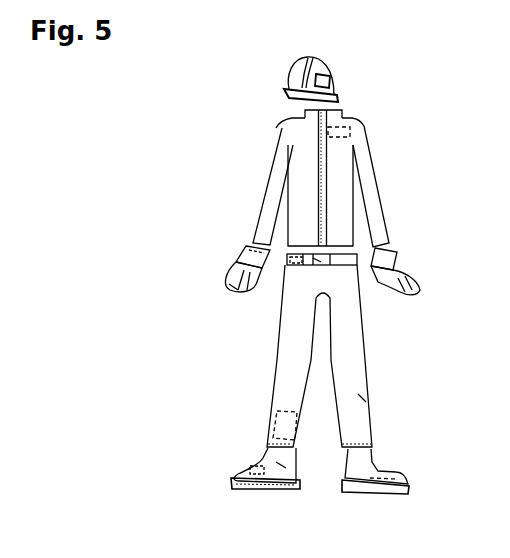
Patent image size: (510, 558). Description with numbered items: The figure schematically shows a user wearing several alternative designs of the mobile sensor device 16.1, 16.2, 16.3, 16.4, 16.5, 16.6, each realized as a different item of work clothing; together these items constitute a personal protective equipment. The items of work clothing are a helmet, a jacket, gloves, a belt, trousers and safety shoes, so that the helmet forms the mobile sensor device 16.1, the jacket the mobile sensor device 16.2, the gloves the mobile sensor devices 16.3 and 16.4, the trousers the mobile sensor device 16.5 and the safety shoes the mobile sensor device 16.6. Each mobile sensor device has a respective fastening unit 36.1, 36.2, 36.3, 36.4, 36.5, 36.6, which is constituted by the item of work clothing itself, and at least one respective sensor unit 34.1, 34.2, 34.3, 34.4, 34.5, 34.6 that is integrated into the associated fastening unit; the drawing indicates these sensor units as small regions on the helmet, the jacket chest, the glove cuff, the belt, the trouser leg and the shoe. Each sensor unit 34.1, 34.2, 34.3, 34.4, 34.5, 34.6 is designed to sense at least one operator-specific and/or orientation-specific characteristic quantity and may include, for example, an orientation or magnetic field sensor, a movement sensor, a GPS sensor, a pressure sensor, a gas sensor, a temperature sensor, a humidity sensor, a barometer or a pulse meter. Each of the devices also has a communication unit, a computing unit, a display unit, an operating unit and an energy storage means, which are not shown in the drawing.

The mobile sensor device 16.1 is at (297, 69).
The mobile sensor device 16.2 is at (341, 178).
The mobile sensor device 16.3 is at (197, 270).
The mobile sensor device 16.4 is at (368, 265).
The mobile sensor device 16.5 is at (315, 350).
The mobile sensor device 16.6 is at (288, 496).
The sensor unit 34.1 is at (337, 74).
The sensor unit 34.2 is at (350, 132).
The sensor unit 34.3 is at (245, 250).
The sensor unit 34.4 is at (290, 260).
The sensor unit 34.5 is at (272, 420).
The sensor unit 34.6 is at (250, 466).
The fastening unit 36.1 is at (317, 57).
The fastening unit 36.2 is at (287, 121).
The fastening unit 36.3 is at (230, 287).
The fastening unit 36.4 is at (320, 260).
The fastening unit 36.5 is at (360, 398).
The fastening unit 36.6 is at (280, 465).